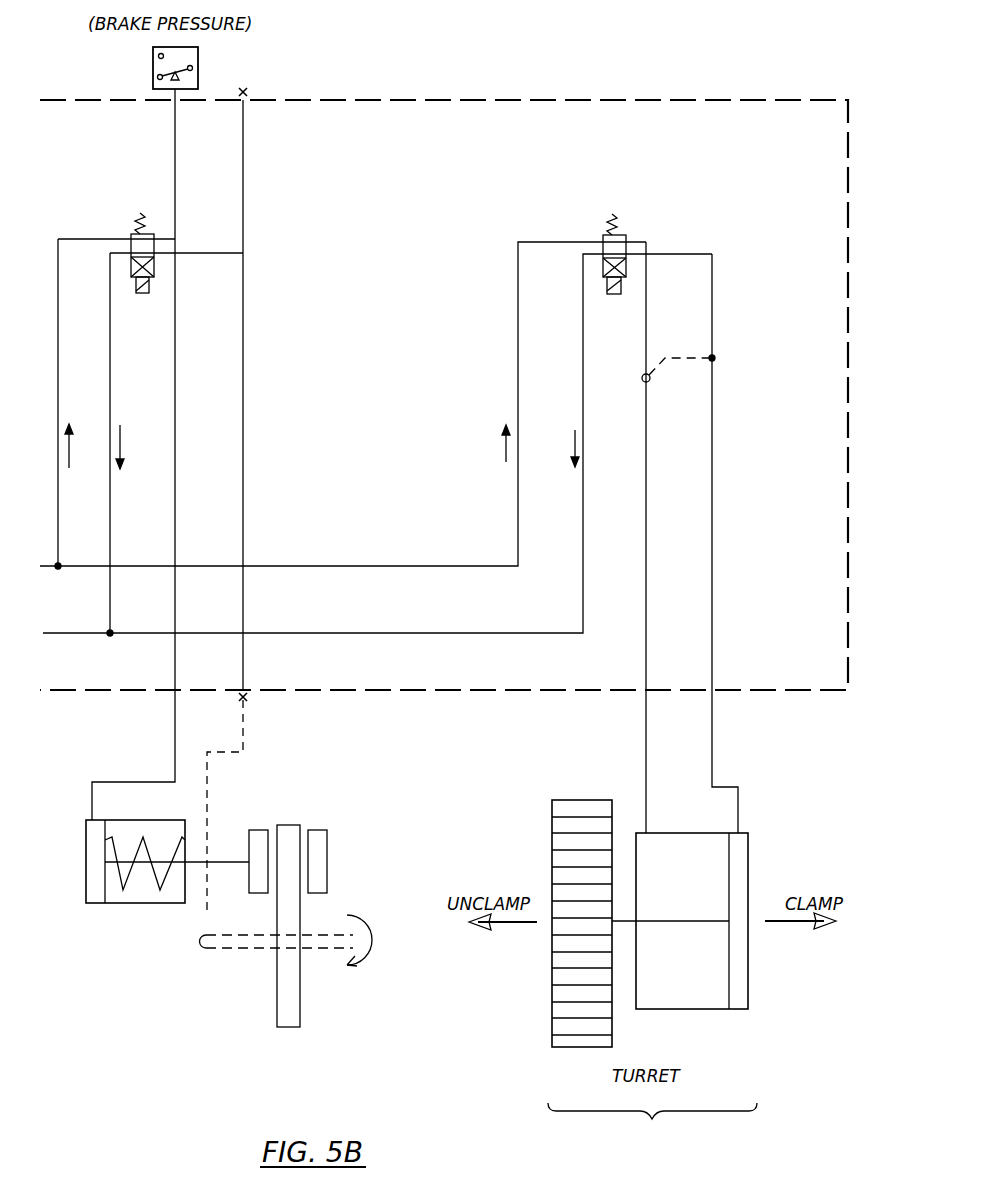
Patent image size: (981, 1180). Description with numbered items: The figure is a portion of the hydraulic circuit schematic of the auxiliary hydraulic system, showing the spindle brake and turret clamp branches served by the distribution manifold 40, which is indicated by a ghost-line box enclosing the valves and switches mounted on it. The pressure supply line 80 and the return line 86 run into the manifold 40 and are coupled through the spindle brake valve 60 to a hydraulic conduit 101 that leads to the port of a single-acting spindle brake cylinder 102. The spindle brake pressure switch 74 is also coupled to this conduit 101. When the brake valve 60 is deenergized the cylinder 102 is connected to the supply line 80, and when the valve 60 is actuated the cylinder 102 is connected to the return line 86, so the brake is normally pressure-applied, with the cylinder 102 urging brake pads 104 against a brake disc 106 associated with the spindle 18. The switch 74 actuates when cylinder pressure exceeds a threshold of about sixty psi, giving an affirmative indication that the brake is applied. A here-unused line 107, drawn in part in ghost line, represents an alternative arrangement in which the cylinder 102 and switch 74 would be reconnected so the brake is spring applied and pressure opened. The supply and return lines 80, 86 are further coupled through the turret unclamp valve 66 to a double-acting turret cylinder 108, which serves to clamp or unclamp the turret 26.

The distribution manifold 40 is at (545, 100).
The spindle brake pressure switch 74 is at (200, 68).
The spindle brake valve 60 is at (124, 226).
The turret unclamp valve 66 is at (636, 233).
The pressure supply line 80 is at (60, 394).
The return line 86 is at (112, 394).
The hydraulic conduit 101 is at (178, 456).
The here-unused line 107 is at (245, 440).
The spindle brake cylinder 102 is at (162, 905).
The brake pads 104 is at (259, 828).
The brake disc 106 is at (296, 1030).
The spindle 18 is at (240, 950).
The turret 26 is at (580, 1048).
The turret cylinder 108 is at (718, 1010).